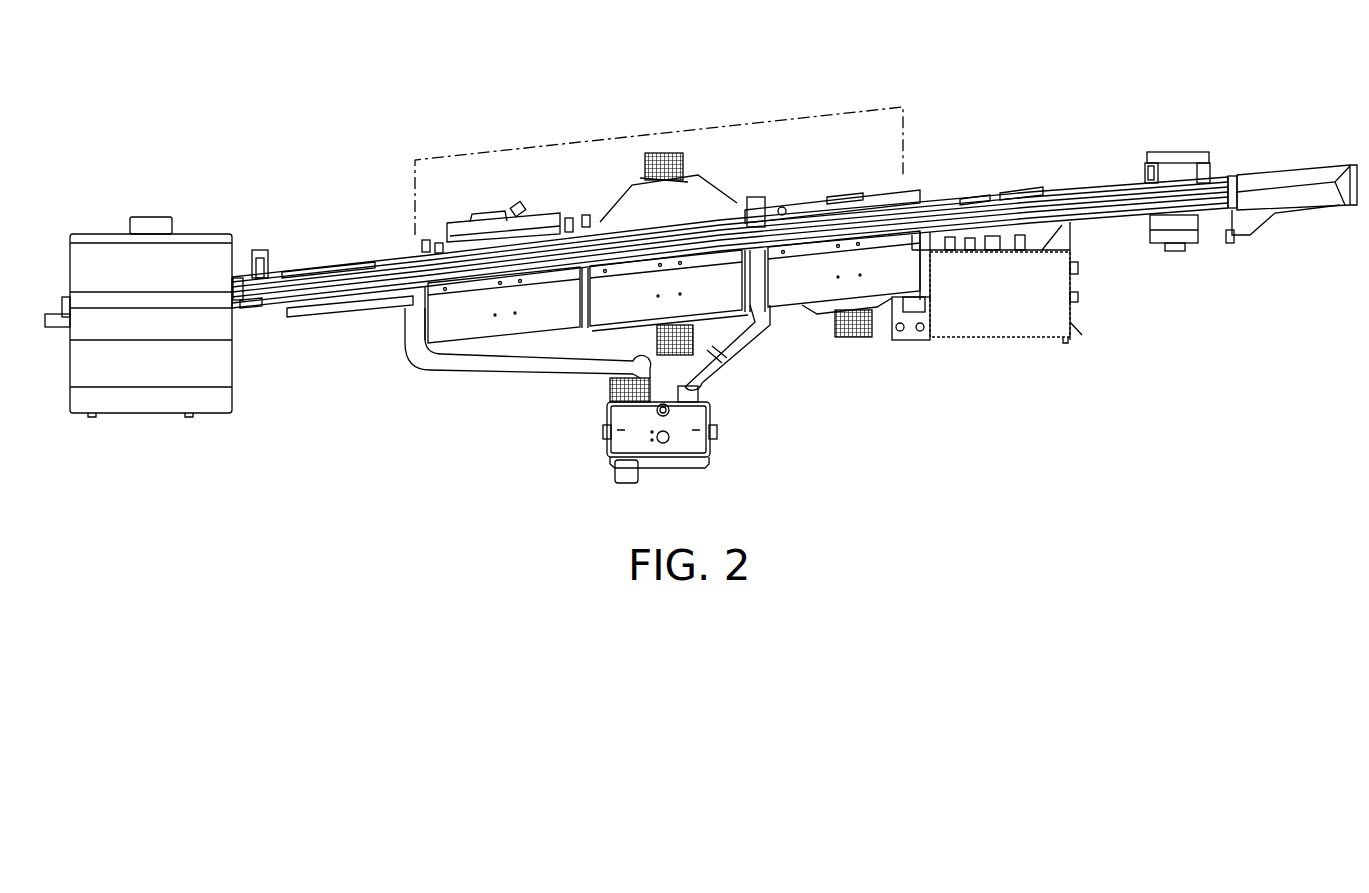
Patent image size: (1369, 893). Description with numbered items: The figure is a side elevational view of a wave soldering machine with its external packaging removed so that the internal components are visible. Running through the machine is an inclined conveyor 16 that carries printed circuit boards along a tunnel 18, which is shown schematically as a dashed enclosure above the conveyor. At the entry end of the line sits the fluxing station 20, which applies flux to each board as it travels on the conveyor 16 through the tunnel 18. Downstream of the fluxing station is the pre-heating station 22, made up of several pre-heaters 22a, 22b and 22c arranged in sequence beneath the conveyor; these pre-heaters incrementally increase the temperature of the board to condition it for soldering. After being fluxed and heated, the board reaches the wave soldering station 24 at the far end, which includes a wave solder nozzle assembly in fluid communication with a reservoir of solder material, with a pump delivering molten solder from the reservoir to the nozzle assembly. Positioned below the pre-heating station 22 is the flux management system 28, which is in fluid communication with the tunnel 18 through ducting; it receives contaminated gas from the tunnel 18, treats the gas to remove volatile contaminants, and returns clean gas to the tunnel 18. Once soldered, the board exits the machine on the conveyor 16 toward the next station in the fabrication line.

The conveyor 16 is at (347, 285).
The tunnel 18 is at (517, 175).
The fluxing station 20 is at (103, 203).
The pre-heating station 22 is at (681, 101).
The pre-heater 22a is at (507, 217).
The pre-heater 22b is at (651, 222).
The pre-heater 22c is at (818, 202).
The wave soldering station 24 is at (1003, 162).
The flux management system 28 is at (748, 468).